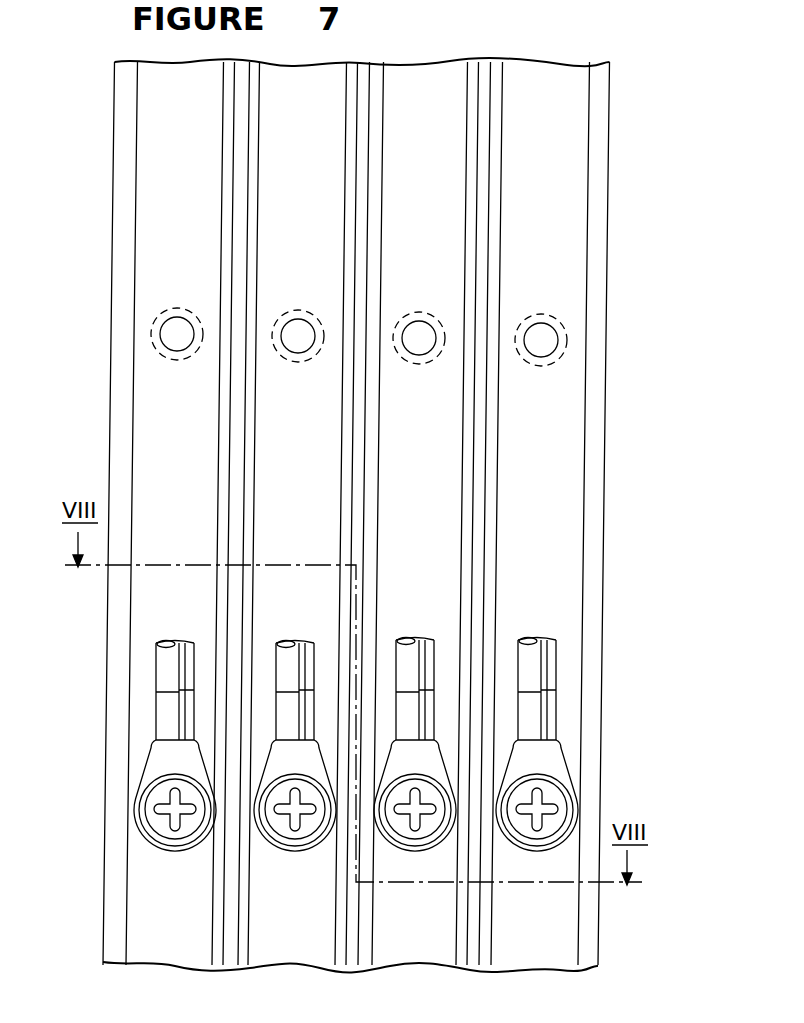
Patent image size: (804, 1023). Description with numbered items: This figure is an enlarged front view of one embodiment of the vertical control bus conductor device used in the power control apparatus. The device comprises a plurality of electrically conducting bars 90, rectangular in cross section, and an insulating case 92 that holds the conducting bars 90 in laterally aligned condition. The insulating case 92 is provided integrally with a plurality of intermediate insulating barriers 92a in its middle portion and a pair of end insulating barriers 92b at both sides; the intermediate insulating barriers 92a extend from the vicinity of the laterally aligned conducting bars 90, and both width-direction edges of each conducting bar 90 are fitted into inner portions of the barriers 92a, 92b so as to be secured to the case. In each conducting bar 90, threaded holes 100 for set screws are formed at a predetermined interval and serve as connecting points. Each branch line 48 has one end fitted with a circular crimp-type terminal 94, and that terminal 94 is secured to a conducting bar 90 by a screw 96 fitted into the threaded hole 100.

The branch line 48 is at (157, 648).
The conducting bar 90 is at (168, 117).
The insulating case 92 is at (110, 425).
The intermediate insulating barrier 92a is at (254, 488).
The end insulating barrier 92b is at (136, 487).
The circular crimp-type terminal 94 is at (155, 710).
The screw 96 is at (156, 822).
The threaded hole 100 is at (178, 318).